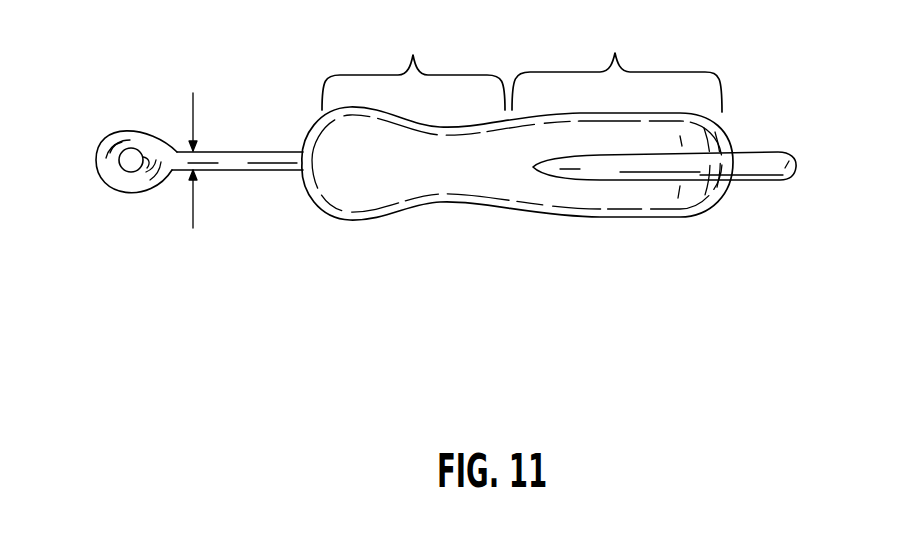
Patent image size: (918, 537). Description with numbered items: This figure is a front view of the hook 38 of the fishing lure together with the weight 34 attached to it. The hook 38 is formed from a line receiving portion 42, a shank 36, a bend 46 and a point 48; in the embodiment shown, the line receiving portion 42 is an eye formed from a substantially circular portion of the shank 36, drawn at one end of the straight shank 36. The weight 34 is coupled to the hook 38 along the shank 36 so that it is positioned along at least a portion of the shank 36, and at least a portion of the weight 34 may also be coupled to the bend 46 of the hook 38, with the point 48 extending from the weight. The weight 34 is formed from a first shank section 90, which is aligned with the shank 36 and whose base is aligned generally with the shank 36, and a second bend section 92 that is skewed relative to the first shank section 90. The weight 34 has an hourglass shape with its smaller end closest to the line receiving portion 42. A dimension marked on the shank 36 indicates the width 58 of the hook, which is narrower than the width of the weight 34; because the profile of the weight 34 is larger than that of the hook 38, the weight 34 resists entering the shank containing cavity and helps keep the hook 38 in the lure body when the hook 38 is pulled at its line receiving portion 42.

The weight 34 is at (407, 202).
The shank 36 is at (226, 150).
The hook 38 is at (273, 150).
The line receiving portion 42 is at (117, 190).
The bend 46 is at (791, 182).
The point 48 is at (553, 170).
The width of the hook 58 is at (193, 216).
The first shank section 90 is at (413, 64).
The second bend section 92 is at (617, 65).